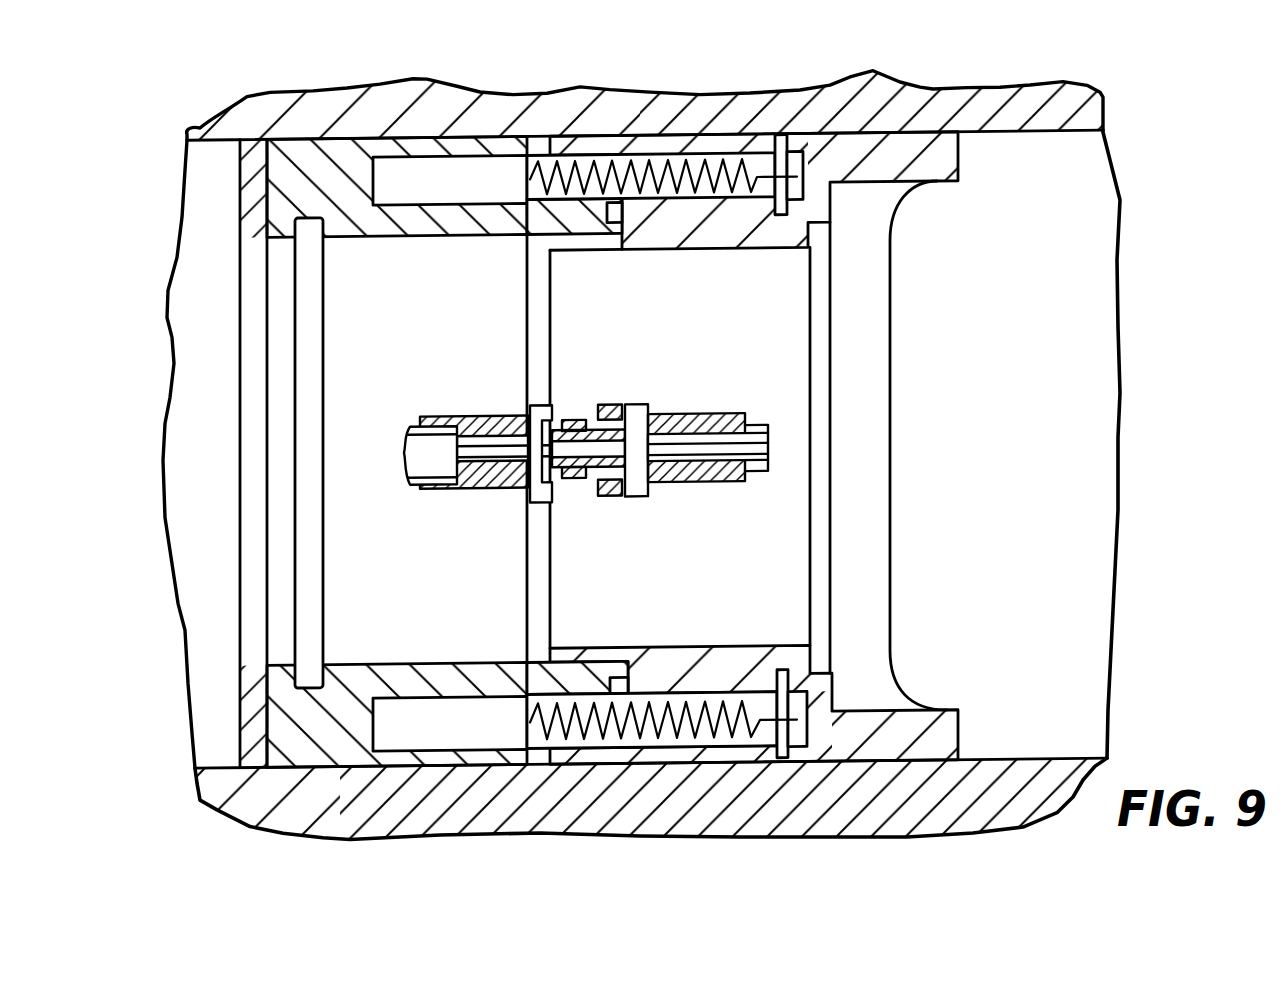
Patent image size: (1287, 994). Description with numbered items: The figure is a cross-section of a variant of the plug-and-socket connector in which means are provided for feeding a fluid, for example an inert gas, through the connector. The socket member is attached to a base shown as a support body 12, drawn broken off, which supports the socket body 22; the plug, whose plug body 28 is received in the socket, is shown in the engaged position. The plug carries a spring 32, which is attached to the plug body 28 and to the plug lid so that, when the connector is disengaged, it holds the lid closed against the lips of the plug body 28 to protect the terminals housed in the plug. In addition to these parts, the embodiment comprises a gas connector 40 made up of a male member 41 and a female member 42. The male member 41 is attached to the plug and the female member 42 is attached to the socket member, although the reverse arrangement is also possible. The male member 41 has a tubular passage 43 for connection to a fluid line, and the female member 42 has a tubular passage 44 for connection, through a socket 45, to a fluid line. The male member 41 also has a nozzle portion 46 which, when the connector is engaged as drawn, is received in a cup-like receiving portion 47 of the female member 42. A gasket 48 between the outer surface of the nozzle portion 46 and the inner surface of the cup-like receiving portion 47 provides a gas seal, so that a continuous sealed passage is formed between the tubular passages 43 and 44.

The support body 12 is at (375, 843).
The socket body 22 is at (384, 669).
The plug body 28 is at (920, 139).
The spring 32 is at (617, 170).
The gas connector 40 is at (735, 418).
The male member 41 is at (745, 486).
The female member 42 is at (470, 420).
The tubular passage 43 is at (770, 452).
The tubular passage 44 is at (470, 489).
The socket 45 is at (418, 476).
The nozzle portion 46 is at (610, 496).
The cup-like receiving portion 47 is at (542, 487).
The gasket 48 is at (603, 500).